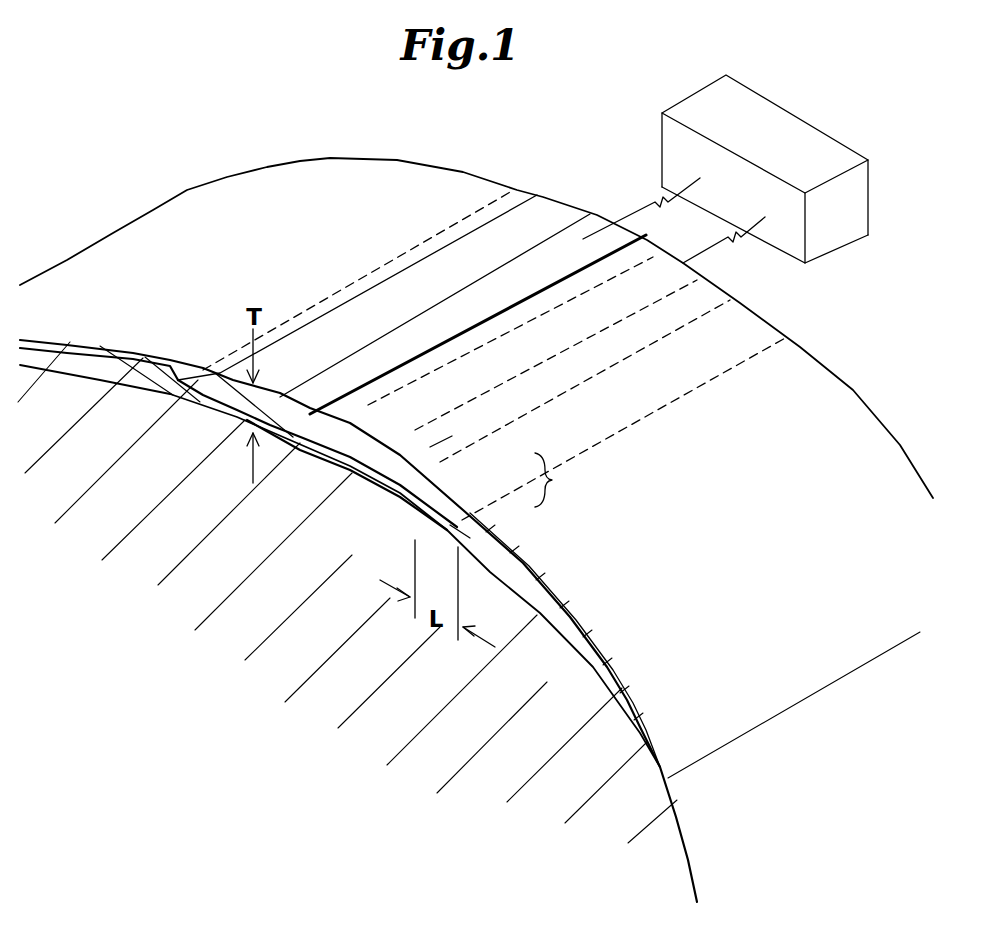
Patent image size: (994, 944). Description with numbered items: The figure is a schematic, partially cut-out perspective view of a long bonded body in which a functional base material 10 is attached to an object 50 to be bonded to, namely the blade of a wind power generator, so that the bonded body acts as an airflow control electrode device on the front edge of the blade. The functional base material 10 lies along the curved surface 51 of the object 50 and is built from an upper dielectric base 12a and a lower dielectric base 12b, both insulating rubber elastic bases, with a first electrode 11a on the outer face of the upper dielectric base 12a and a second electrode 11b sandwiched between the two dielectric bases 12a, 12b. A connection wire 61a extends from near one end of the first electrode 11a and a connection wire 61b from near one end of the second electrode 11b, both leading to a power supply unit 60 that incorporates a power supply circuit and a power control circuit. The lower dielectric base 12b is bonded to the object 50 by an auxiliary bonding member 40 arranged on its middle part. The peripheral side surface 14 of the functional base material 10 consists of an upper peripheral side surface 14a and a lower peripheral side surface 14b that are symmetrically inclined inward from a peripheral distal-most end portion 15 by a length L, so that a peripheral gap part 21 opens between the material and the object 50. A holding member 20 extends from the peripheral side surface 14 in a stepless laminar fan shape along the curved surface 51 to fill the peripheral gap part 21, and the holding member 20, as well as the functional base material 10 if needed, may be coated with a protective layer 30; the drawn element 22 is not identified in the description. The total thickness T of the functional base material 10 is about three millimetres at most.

The functional base material 10 is at (595, 506).
The first electrode 11a is at (303, 400).
The second electrode 11b is at (380, 421).
The upper dielectric base 12a is at (420, 440).
The lower dielectric base 12b is at (430, 447).
The peripheral side surface 14 is at (558, 480).
The upper peripheral side surface 14a is at (450, 477).
The lower peripheral side surface 14b is at (440, 493).
The peripheral distal-most end portion 15 is at (450, 527).
The holding member 20 is at (562, 630).
The peripheral gap part 21 is at (463, 548).
The substrate lower layer 22 is at (627, 687).
The protective layer 30 is at (640, 713).
The auxiliary bonding member 40 is at (360, 470).
The object to be bonded to 50 is at (163, 558).
The curved surface 51 is at (693, 867).
The power supply unit 60 is at (785, 130).
The connection wire 61a is at (645, 210).
The connection wire 61b is at (713, 250).